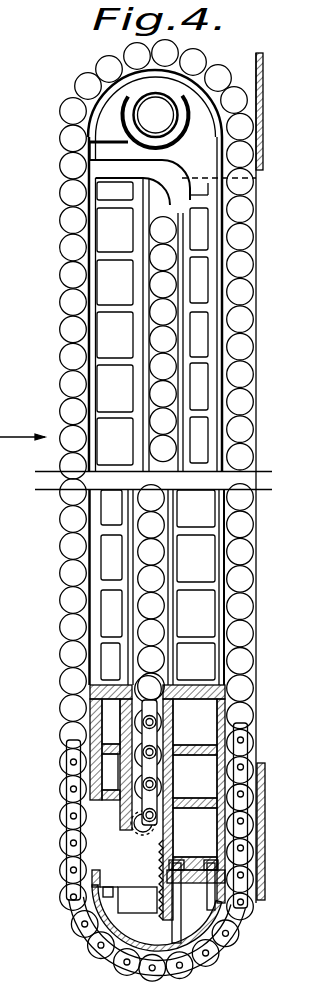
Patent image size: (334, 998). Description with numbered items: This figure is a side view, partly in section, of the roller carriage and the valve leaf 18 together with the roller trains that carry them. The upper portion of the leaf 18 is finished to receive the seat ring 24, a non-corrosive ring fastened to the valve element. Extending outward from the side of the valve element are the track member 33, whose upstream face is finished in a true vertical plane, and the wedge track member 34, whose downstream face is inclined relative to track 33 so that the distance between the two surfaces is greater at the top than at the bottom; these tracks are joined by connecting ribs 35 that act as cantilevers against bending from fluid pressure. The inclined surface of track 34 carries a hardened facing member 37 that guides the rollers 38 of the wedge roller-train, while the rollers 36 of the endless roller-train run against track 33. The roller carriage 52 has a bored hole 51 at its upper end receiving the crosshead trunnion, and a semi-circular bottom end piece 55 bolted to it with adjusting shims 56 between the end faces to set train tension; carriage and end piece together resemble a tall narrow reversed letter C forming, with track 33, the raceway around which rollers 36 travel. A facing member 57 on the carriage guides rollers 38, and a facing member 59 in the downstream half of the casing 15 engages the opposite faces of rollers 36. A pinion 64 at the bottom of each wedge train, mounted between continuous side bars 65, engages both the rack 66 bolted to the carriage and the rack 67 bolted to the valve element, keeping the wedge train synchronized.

The facing member 59 is at (256, 54).
The bored hole 51 is at (140, 113).
The roller carriage 52 is at (197, 128).
The seat ring 24 is at (24, 180).
The valve leaf 18 is at (160, 200).
The wedge track member 34 is at (138, 337).
The facing member 57 is at (180, 380).
The track member 33 is at (93, 395).
The casing 15 is at (0, 265).
The connecting rib 35 is at (115, 260).
The facing member 37 is at (132, 583).
The rollers of wedge roller-train 38 is at (147, 614).
The rollers of endless roller-train 36 is at (243, 183).
The side bar 65 is at (100, 778).
The rack 67 is at (133, 803).
The rack 66 is at (160, 865).
The pinion 64 is at (140, 833).
The adjusting shims 56 is at (247, 907).
The bottom end piece 55 is at (117, 960).